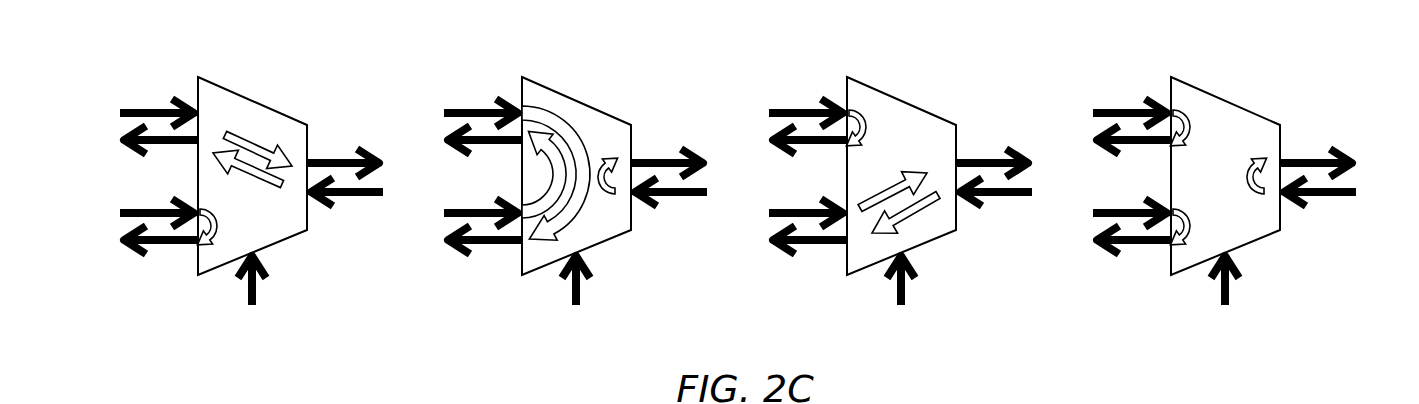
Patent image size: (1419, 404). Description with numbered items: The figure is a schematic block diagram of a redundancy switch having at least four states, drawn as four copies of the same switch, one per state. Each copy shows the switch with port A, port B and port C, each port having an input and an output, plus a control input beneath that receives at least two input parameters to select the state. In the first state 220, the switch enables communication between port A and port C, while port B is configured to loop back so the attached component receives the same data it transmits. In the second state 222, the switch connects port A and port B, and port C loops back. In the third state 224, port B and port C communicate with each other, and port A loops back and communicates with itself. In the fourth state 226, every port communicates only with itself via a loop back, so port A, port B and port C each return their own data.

The state '0' 220 is at (216, 44).
The state '1' 222 is at (574, 187).
The state '2' 224 is at (899, 187).
The state '3' 226 is at (1223, 187).